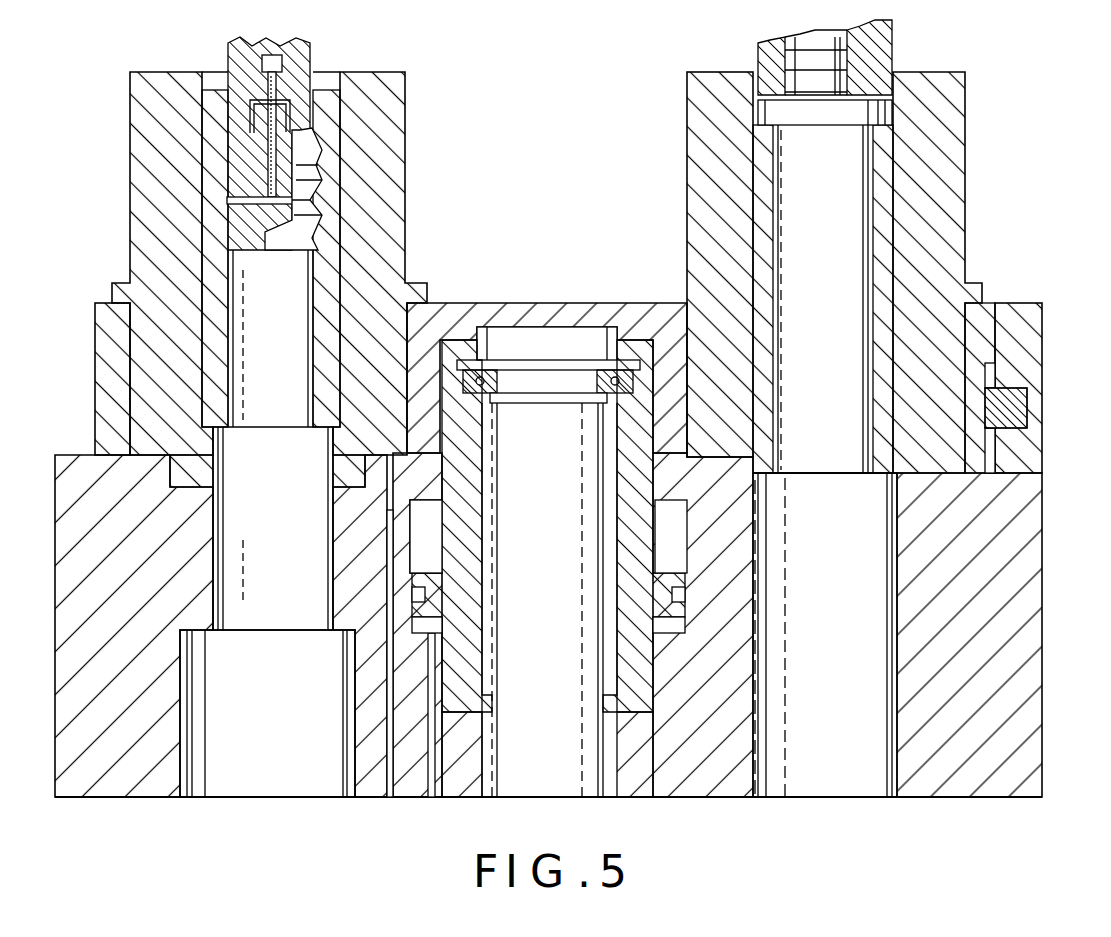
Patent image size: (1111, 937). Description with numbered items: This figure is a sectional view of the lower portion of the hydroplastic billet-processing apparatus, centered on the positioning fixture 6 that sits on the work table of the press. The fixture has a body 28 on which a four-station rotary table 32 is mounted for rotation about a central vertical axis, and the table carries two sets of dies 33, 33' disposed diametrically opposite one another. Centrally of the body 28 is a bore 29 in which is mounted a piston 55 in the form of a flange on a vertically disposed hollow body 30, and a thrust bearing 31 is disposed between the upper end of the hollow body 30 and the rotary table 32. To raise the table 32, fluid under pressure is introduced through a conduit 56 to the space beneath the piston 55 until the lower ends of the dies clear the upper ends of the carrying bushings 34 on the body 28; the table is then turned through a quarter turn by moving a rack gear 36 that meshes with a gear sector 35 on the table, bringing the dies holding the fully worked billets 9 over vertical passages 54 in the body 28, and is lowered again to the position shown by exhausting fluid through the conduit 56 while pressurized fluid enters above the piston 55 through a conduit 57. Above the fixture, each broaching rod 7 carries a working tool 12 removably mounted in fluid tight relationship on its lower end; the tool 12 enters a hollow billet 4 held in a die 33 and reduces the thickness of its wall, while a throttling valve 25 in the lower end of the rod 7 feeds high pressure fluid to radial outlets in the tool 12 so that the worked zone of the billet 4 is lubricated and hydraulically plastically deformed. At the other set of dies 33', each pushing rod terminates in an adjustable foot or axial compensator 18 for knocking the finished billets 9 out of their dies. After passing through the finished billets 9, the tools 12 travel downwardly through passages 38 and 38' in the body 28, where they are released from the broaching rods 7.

The hollow billet 4 is at (227, 366).
The positioning fixture 6 is at (1040, 300).
The broaching rod 7 is at (293, 52).
The fully worked billet 9 is at (765, 480).
The working tool 12 is at (243, 238).
The adjustable foot or axial compensator 18 is at (892, 110).
The throttling valve 25 is at (280, 67).
The body 28 is at (1028, 685).
The bore 29 is at (680, 552).
The hollow body 30 is at (650, 680).
The thrust bearing 31 is at (570, 345).
The rotary table 32 is at (470, 310).
The die 33 is at (281, 263).
The die 33' is at (857, 267).
The carrying bushing 34 is at (217, 461).
The gear sector 35 is at (990, 376).
The rack gear 36 is at (1010, 418).
The passage 38 is at (273, 528).
The passage 38' is at (267, 735).
The vertical passage 54 is at (752, 655).
The piston 55 is at (677, 580).
The conduit 56 is at (432, 790).
The conduit 57 is at (386, 782).